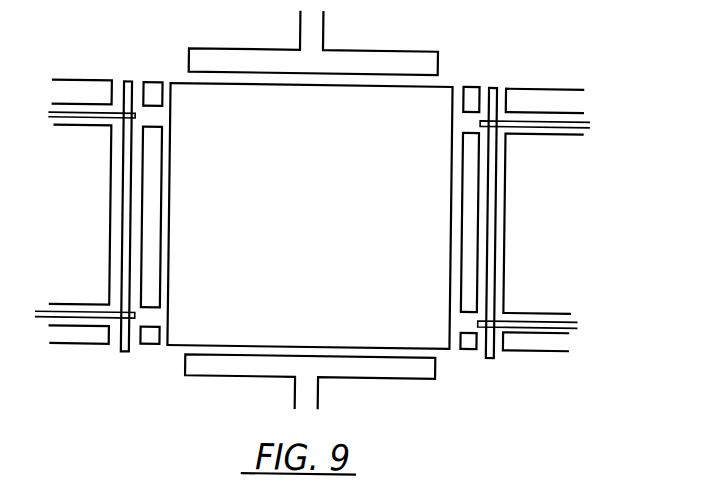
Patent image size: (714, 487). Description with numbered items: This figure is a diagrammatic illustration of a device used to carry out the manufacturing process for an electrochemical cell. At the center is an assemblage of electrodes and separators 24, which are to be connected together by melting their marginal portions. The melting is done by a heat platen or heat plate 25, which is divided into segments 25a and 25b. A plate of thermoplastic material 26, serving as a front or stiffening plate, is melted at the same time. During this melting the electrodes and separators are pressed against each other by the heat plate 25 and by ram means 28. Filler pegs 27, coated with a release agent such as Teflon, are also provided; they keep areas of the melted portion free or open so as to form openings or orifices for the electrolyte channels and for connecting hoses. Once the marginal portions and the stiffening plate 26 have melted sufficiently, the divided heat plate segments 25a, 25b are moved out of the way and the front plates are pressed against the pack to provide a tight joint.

The assemblage of electrodes and separators 24 is at (257, 352).
The heat plate 25 is at (162, 80).
The heat plate segment 25a is at (146, 84).
The heat plate segment 25b is at (152, 252).
The plate of thermoplastic material 26 is at (124, 357).
The filler pegs 27 is at (80, 113).
The ram means 28 is at (348, 51).